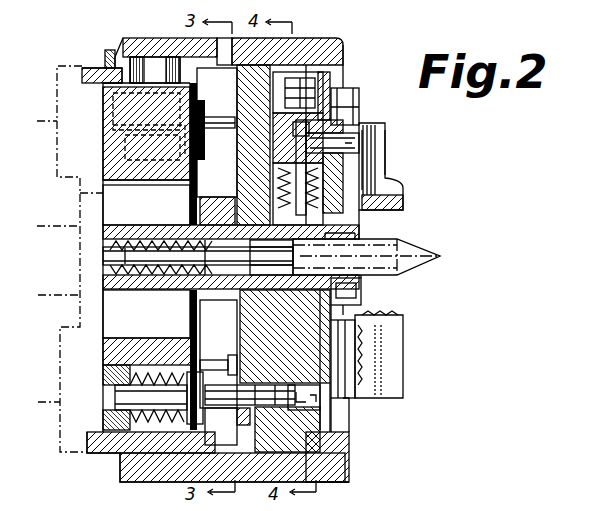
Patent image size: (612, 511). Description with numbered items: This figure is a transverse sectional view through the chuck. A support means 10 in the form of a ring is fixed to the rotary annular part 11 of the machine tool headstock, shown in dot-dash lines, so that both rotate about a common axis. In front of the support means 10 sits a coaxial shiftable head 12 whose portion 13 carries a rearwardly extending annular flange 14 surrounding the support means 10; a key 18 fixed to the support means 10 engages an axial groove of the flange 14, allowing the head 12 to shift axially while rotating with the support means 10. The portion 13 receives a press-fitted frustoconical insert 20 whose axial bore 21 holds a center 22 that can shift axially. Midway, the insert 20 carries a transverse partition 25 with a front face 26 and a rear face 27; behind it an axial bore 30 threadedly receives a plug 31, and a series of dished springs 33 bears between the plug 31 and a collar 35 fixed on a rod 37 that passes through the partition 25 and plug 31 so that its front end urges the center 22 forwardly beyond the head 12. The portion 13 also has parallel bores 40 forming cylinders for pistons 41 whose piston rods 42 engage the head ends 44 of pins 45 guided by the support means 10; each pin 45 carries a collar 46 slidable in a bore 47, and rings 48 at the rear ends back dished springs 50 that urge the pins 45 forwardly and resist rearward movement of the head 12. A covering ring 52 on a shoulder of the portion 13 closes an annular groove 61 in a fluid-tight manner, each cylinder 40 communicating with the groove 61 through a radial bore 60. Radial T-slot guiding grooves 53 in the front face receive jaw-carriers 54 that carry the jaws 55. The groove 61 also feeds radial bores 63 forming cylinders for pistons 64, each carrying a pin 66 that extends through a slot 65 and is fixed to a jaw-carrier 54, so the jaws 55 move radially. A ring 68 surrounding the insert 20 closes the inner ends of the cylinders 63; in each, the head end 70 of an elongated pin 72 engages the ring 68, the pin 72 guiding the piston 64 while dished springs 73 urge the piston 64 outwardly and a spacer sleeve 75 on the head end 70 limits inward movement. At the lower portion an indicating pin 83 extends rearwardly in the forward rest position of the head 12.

The support means 10 is at (88, 66).
The annular part 11 is at (66, 107).
The shiftable head 12 is at (240, 29).
The portion 13 is at (308, 38).
The annular flange 14 is at (157, 38).
The key 18 is at (120, 50).
The frustoconical insert 20 is at (355, 230).
The axial bore 21 is at (360, 238).
The center 22 is at (420, 253).
The transverse partition 25 is at (205, 212).
The front face 26 is at (218, 354).
The rear face 27 is at (197, 218).
The axial bore 30 is at (150, 225).
The plug 31 is at (103, 240).
The dished springs 33 is at (160, 290).
The collar 35 is at (190, 292).
The rod 37 is at (285, 336).
The bores 40 is at (345, 380).
The pistons 41 is at (283, 385).
The piston rods 42 is at (221, 117).
The head ends 44 is at (205, 140).
The pins 45 is at (143, 385).
The collars 46 is at (197, 342).
The bores 47 is at (128, 452).
The rings 48 is at (108, 368).
The dished springs 50 is at (158, 454).
The covering ring 52 is at (333, 48).
The guiding grooves 53 is at (345, 98).
The jaw-carriers 54 is at (380, 170).
The jaws 55 is at (382, 170).
The radial bore 60 is at (345, 440).
The annular groove 61 is at (330, 460).
The radial bores 63 is at (330, 78).
The pistons 64 is at (359, 107).
The slot 65 is at (368, 165).
The pin 66 is at (365, 145).
The ring 68 is at (350, 305).
The head end 70 is at (272, 200).
The pin 72 is at (372, 192).
The dished springs 73 is at (296, 178).
The spacer sleeve 75 is at (375, 213).
The indicating pin 83 is at (223, 431).